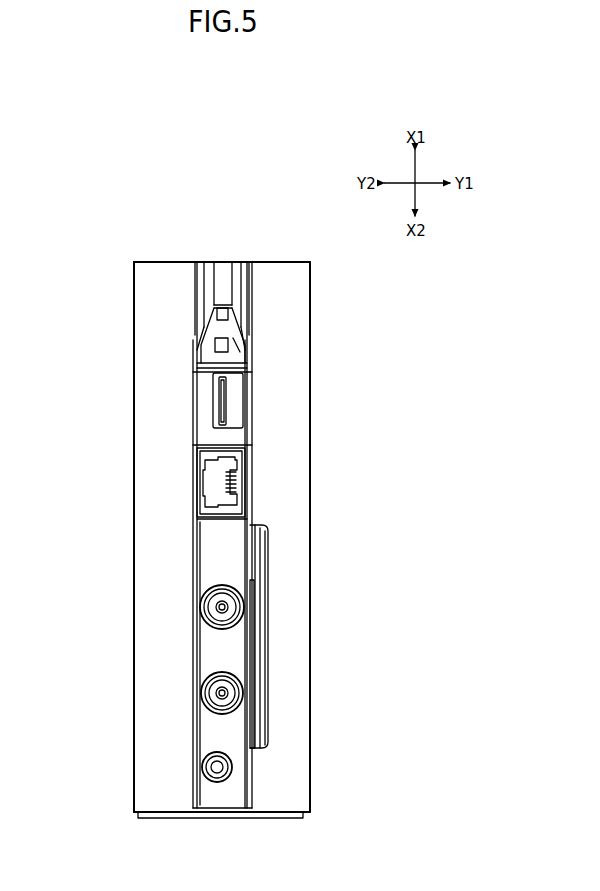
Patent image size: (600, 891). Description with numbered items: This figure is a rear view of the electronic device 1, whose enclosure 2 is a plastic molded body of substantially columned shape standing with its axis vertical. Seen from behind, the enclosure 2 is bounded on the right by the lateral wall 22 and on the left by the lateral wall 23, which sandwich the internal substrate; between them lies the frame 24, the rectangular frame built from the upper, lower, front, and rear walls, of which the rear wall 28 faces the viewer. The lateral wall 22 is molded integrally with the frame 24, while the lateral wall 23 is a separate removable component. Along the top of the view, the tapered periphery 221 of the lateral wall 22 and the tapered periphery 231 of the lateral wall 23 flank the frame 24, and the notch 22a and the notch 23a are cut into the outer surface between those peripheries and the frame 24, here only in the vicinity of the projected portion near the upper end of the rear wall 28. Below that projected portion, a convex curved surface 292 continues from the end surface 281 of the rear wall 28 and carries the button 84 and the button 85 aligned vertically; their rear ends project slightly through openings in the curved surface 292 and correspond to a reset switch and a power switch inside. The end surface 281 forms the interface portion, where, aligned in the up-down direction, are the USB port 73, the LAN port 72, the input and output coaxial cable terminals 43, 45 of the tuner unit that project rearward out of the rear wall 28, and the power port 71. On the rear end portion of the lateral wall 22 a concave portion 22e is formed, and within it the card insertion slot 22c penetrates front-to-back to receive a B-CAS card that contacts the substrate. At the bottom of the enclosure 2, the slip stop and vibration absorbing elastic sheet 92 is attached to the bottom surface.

The electronic device 1 is at (44, 230).
The enclosure 2 is at (150, 262).
The lateral wall 22 is at (303, 507).
The notch 22a is at (248, 280).
The card insertion slot 22c is at (263, 665).
The concave portion 22e is at (263, 608).
The lateral wall 23 is at (145, 398).
The notch 23a is at (195, 277).
The frame 24 is at (222, 272).
The rear wall 28 is at (212, 552).
The end surface 281 is at (207, 572).
The periphery 221 is at (247, 300).
The periphery 231 is at (197, 302).
The curved surface 292 is at (237, 343).
The coaxial cable terminal 43 is at (200, 590).
The coaxial cable terminal 45 is at (200, 675).
The power port 71 is at (220, 783).
The LAN port 72 is at (197, 457).
The USB port 73 is at (243, 410).
The button 84 is at (230, 350).
The button 85 is at (220, 321).
The elastic sheet 92 is at (283, 818).